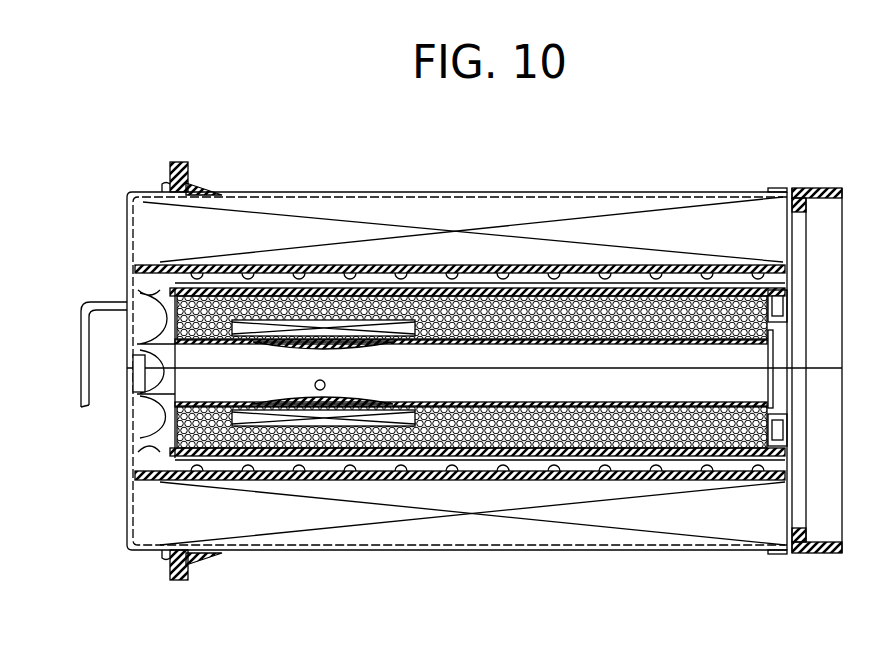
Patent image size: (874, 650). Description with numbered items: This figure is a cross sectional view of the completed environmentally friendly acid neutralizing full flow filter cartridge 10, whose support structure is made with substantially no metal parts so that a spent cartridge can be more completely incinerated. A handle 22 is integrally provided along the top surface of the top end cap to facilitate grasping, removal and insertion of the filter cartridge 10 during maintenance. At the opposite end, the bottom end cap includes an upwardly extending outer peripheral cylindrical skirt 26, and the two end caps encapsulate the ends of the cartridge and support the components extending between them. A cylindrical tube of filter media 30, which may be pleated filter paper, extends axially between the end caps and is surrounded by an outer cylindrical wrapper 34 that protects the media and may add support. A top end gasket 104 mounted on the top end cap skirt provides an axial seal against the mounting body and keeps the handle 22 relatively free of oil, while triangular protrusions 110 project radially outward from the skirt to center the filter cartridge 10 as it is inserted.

The filter cartridge 10 is at (84, 143).
The handle 22 is at (78, 317).
The outer peripheral cylindrical skirt 26 is at (778, 189).
The filter media 30 is at (482, 540).
The outer cylindrical wrapper 34 is at (397, 549).
The top end gasket 104 is at (180, 161).
The triangular protrusions 110 is at (207, 187).